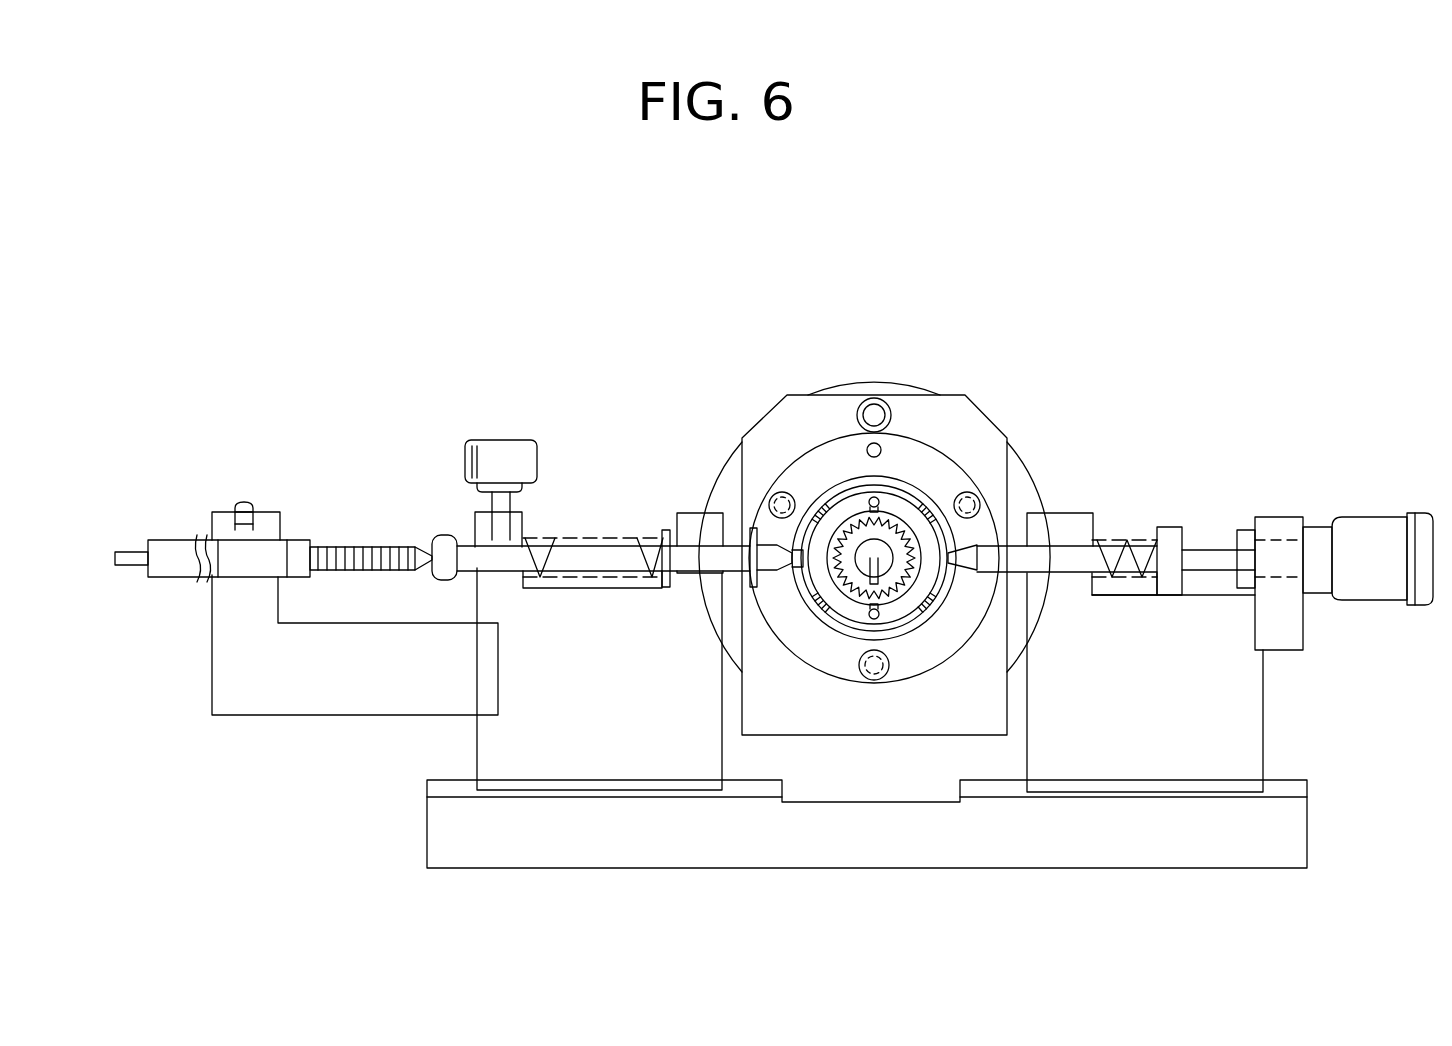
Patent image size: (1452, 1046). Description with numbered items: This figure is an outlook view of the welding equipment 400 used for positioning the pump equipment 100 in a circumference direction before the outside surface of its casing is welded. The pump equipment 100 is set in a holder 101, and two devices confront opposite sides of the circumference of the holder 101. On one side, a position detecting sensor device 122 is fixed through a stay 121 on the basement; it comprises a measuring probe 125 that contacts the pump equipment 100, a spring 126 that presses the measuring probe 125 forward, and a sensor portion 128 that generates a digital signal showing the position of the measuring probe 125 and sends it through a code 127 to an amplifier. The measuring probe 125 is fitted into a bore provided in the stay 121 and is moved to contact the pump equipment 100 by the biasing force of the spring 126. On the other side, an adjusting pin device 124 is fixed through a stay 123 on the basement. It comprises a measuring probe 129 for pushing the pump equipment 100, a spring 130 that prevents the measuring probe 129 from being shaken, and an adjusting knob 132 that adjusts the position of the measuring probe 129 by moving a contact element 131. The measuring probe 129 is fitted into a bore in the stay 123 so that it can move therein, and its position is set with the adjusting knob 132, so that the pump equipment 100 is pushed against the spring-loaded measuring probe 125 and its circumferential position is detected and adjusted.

The gear inspection apparatus 400 is at (1140, 310).
The pump equipment 100 is at (963, 557).
The holder 101 is at (953, 537).
The stay 121 is at (483, 748).
The position detecting sensor device 122 is at (323, 466).
The stay 123 is at (1255, 745).
The adjusting pin device 124 is at (1203, 458).
The measuring probe 125 is at (705, 512).
The spring 126 is at (560, 538).
The code 127 is at (140, 548).
The sensor portion 128 is at (468, 458).
The measuring probe 129 is at (1030, 545).
The spring 130 is at (1148, 548).
The contact element 131 is at (1210, 548).
The adjusting knob 132 is at (1368, 517).